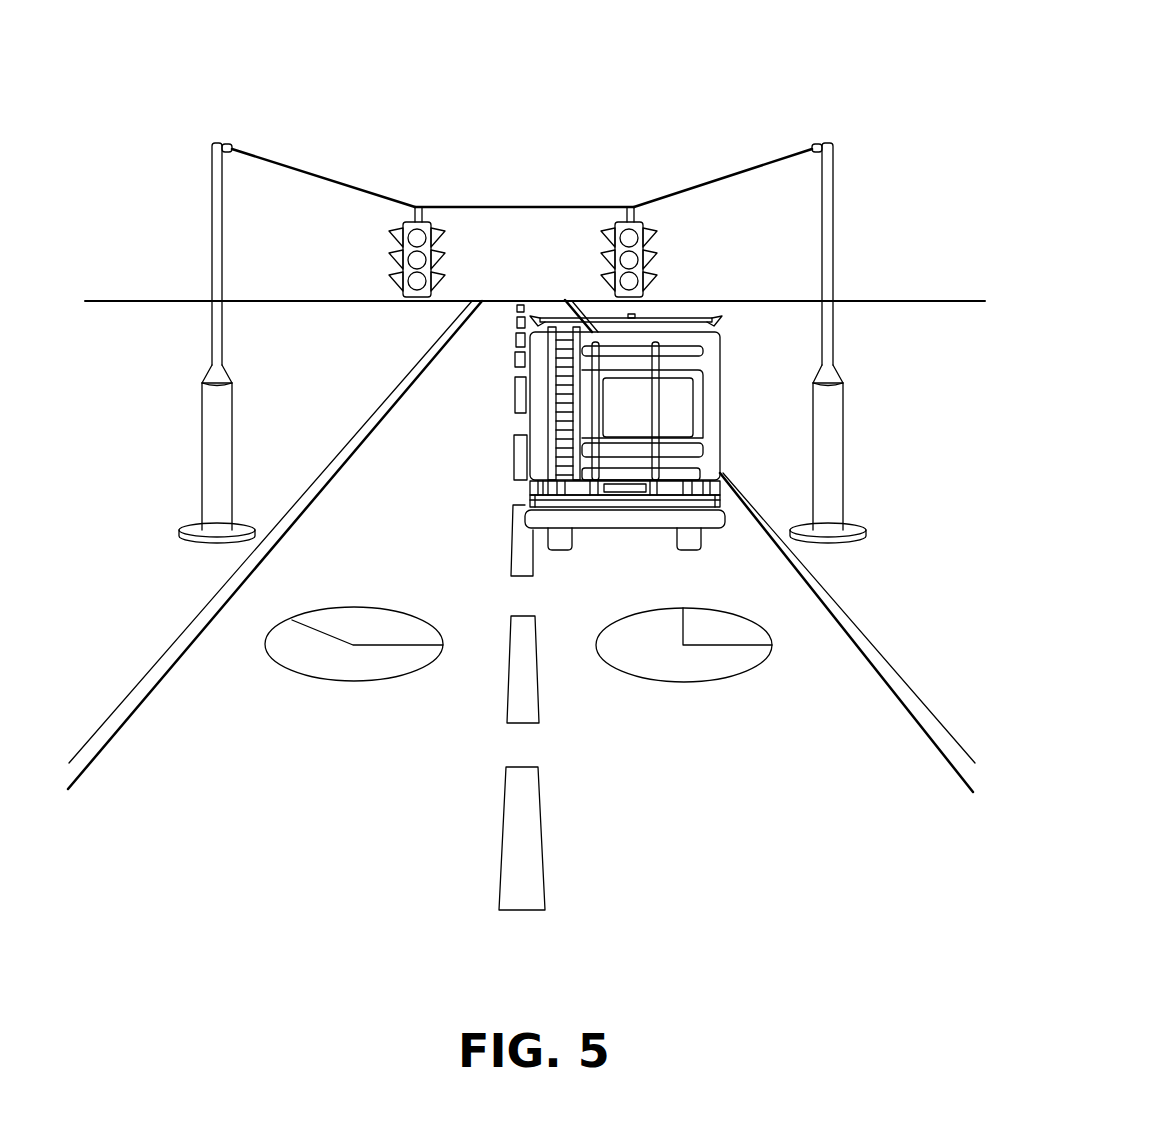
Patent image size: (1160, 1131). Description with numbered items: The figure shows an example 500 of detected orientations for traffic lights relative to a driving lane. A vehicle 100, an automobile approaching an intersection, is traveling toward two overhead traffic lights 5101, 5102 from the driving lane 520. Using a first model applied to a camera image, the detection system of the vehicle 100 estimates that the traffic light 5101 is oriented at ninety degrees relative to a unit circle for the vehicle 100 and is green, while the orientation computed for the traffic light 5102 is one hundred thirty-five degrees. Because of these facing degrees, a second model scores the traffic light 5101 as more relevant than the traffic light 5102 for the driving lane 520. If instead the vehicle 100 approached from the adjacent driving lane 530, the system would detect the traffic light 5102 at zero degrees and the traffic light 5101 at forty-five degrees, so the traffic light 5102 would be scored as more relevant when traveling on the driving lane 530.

The example of detected orientations for traffic lights 500 is at (791, 86).
The traffic light 5101 is at (635, 207).
The traffic light 5102 is at (420, 207).
The vehicle 100 is at (733, 507).
The driving lane 520 is at (817, 733).
The driving lane 530 is at (320, 735).